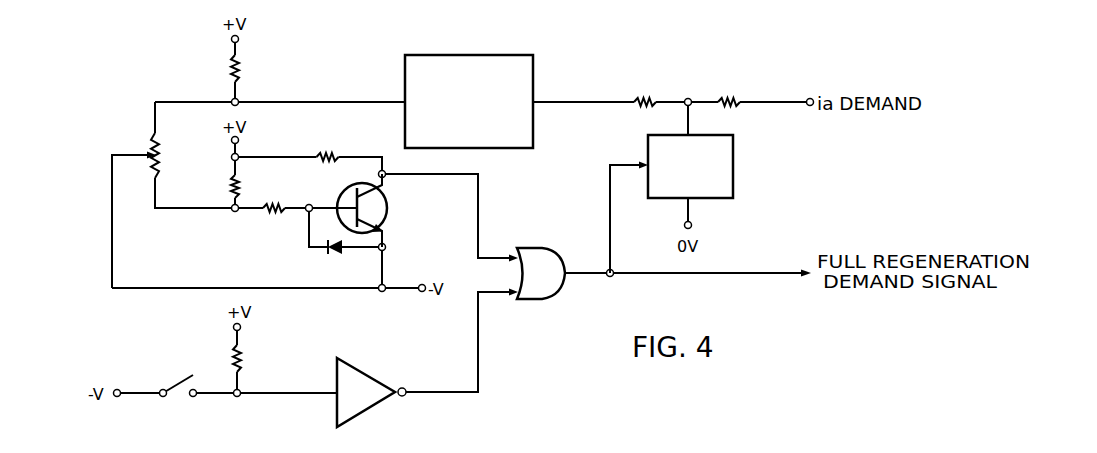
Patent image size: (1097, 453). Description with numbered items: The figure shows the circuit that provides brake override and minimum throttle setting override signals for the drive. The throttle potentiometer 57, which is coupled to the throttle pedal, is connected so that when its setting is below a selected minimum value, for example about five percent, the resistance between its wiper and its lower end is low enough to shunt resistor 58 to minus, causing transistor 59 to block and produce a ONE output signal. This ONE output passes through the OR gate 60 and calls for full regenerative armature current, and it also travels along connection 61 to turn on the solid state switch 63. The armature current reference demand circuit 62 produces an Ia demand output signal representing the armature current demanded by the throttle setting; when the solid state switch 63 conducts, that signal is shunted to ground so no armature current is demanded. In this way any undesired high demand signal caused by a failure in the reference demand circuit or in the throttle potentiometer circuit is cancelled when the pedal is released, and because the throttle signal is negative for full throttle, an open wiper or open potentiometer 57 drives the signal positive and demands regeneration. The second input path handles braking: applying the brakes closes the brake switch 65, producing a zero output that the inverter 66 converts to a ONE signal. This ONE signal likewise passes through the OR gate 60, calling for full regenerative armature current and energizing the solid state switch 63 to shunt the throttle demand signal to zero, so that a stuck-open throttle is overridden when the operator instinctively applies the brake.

The throttle potentiometer 57 is at (162, 142).
The resistor 58 is at (272, 212).
The transistor 59 is at (387, 210).
The OR gate 60 is at (537, 249).
The connection 61 is at (610, 216).
The armature current reference demand circuit 62 is at (530, 68).
The solid state switch 63 is at (647, 145).
The brake switch 65 is at (188, 392).
The inverter 66 is at (367, 377).